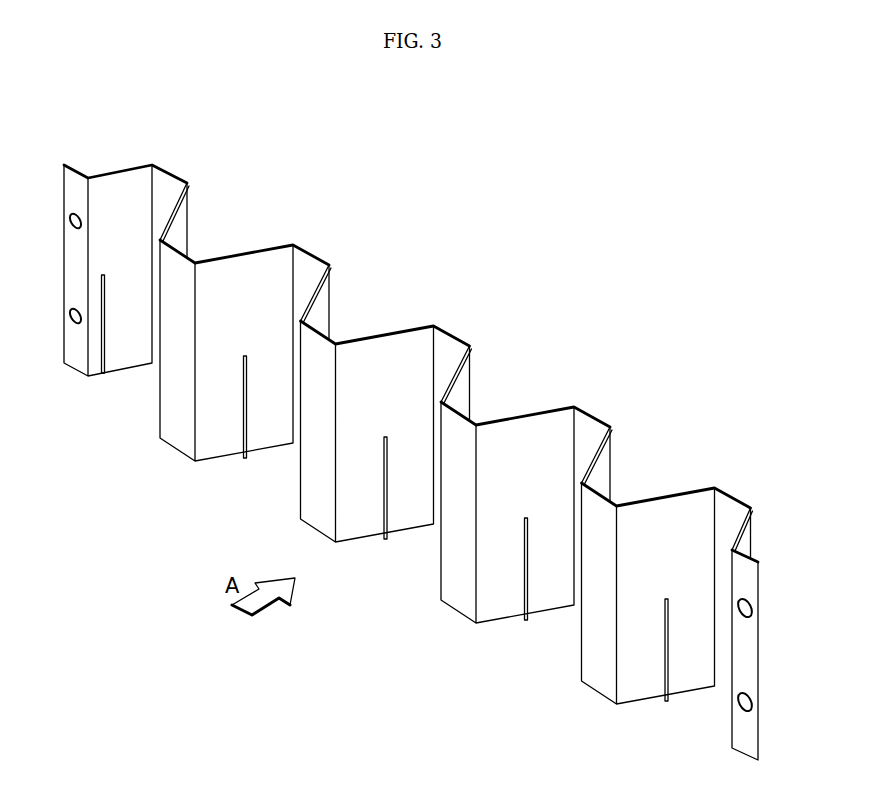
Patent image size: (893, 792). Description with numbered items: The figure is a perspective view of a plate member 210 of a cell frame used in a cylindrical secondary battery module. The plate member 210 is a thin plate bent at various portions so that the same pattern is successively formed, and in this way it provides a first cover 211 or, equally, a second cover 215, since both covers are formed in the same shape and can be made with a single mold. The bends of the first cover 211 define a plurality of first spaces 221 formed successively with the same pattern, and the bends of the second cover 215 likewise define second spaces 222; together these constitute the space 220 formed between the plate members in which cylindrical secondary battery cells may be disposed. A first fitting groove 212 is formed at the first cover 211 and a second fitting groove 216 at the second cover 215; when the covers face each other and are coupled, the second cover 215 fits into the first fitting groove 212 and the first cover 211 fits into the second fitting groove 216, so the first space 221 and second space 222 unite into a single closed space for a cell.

The plate member 210 is at (179, 230).
The first cover 211 is at (227, 199).
The second cover 215 is at (187, 200).
The first fitting groove 212 is at (204, 439).
The second fitting groove 216 is at (245, 460).
The space 220 is at (459, 460).
The first space 221 is at (385, 389).
The second space 222 is at (363, 318).